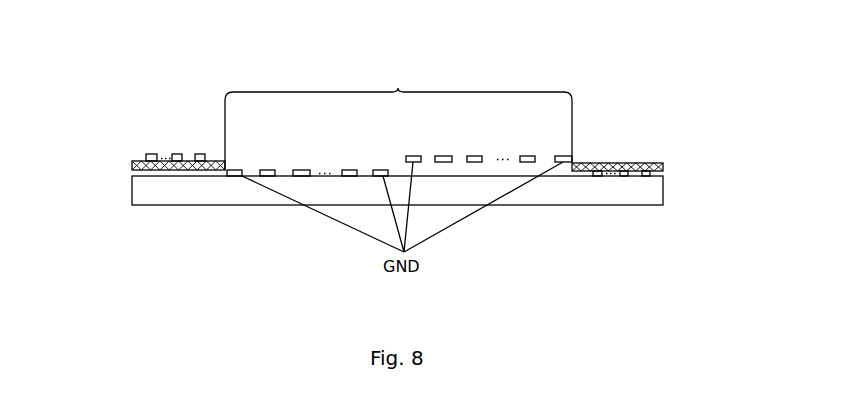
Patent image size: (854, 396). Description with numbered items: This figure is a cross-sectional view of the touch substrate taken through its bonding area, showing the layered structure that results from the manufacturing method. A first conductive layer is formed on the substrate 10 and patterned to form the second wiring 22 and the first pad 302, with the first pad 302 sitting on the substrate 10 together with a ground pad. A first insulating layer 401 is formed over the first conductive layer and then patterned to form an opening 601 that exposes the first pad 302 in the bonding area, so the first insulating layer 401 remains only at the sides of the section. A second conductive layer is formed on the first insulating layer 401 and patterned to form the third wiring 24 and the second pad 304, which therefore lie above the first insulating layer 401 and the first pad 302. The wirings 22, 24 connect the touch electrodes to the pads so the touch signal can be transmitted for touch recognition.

The substrate 10 is at (128, 192).
The first insulating layer 401 is at (131, 164).
The third wiring 24 is at (205, 151).
The second wiring 22 is at (649, 177).
The first pad 302 is at (353, 170).
The second pad 304 is at (528, 156).
The opening 601 is at (398, 118).